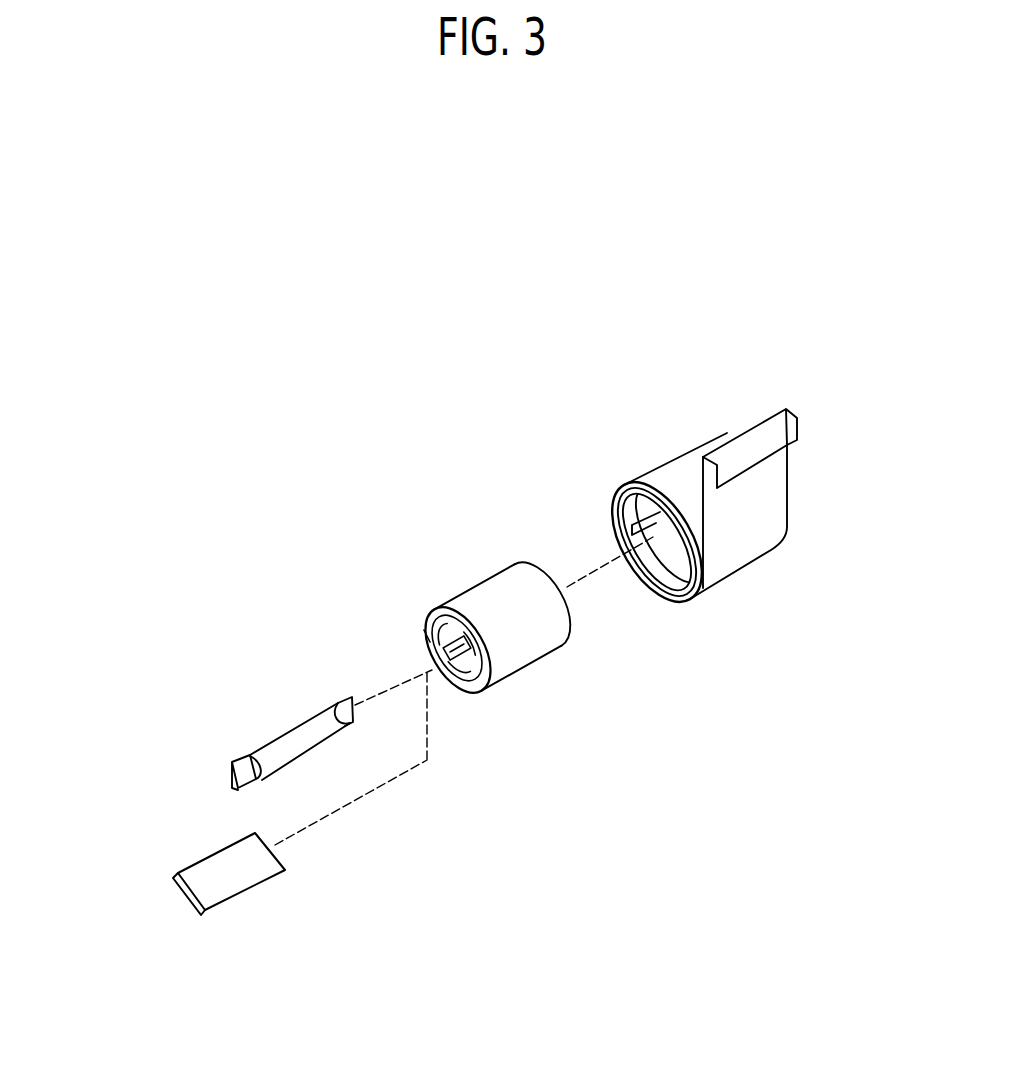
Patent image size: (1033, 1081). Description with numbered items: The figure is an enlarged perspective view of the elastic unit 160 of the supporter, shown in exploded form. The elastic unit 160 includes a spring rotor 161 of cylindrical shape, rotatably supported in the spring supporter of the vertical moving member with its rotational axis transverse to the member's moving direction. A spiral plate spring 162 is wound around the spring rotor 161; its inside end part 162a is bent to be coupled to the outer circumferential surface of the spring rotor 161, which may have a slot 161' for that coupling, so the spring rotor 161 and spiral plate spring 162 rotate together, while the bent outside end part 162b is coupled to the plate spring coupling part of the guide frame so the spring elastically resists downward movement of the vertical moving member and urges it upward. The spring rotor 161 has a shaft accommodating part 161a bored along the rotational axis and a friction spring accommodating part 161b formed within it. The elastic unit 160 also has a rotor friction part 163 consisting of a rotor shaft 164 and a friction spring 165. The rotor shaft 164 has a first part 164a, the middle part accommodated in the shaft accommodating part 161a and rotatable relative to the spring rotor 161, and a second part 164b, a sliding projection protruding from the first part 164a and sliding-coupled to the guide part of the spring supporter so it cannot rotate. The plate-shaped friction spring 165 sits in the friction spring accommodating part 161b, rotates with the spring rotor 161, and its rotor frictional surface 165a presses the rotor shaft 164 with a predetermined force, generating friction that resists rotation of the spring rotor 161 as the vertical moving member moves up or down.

The elastic unit 160 is at (573, 354).
The spring rotor 161 is at (436, 635).
The slot 161' is at (366, 571).
The shaft accommodating part 161a is at (477, 680).
The friction spring accommodating part 161b is at (463, 667).
The spiral plate spring 162 is at (729, 513).
The inside end part 162a is at (650, 582).
The outside end part 162b is at (798, 433).
The rotor friction part 163 is at (183, 632).
The rotor shaft 164 is at (257, 652).
The first part 164a is at (317, 713).
The second part 164b is at (232, 762).
The friction spring 165 is at (164, 795).
The rotor frictional surface 165a is at (198, 882).